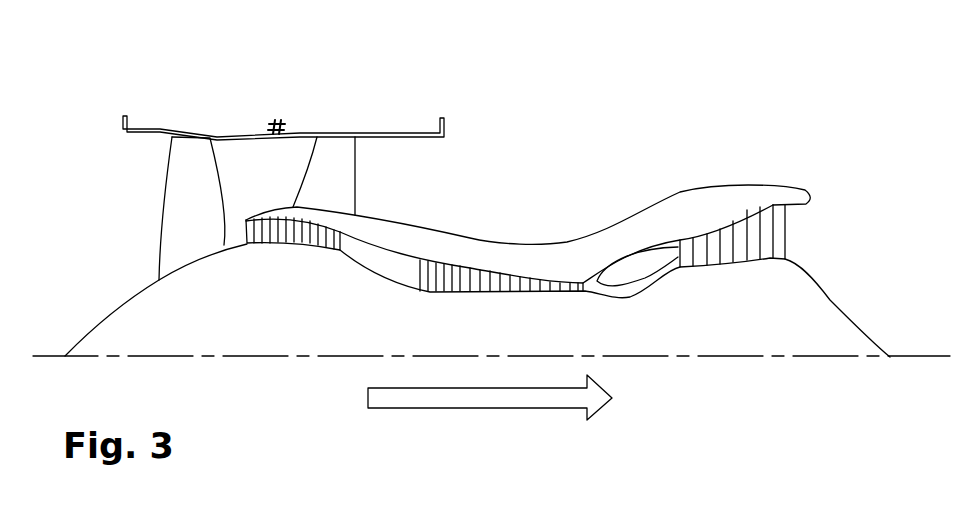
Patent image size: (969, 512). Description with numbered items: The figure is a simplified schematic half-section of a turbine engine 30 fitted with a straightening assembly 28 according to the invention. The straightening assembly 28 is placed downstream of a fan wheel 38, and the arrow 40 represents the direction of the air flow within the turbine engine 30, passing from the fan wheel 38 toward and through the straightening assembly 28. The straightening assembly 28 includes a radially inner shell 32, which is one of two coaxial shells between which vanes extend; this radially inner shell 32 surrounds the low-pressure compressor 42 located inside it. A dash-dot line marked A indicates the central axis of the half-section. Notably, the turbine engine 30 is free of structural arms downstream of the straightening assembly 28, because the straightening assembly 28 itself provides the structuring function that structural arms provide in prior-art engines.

The straightening assembly 28 is at (342, 172).
The turbine engine 30 is at (563, 108).
The radially inner shell 32 is at (522, 243).
The fan wheel 38 is at (155, 183).
The arrow 40 is at (512, 392).
The low-pressure compressor 42 is at (480, 295).
The engine central axis A is at (802, 357).